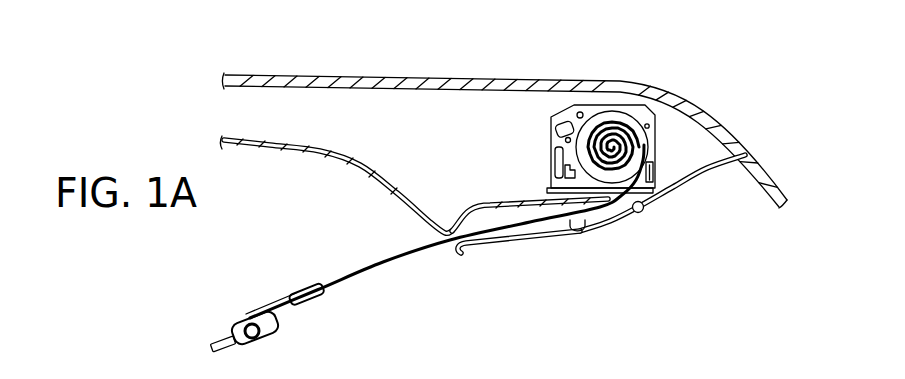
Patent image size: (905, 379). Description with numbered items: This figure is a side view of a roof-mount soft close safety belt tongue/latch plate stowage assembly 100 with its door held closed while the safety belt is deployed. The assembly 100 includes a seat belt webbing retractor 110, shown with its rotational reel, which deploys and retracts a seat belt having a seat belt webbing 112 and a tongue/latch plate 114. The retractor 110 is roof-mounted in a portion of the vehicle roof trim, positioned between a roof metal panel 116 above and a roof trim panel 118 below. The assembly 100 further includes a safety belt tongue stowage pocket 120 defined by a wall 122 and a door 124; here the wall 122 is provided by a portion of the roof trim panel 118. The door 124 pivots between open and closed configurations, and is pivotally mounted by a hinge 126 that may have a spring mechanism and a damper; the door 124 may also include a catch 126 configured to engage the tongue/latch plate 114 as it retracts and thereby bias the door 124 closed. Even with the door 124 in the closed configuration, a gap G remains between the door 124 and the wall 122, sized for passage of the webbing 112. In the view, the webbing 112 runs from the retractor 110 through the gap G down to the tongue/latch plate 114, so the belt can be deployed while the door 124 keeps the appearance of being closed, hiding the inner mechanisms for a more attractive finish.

The soft close safety belt tongue/latch plate stowage assembly 100 is at (703, 62).
The seat belt webbing retractor 110 is at (656, 134).
The seat belt webbing 112 is at (385, 262).
The tongue/latch plate 114 is at (272, 302).
The roof metal panel 116 is at (343, 82).
The roof trim panel 118 is at (325, 151).
The safety belt tongue stowage pocket 120 is at (620, 231).
The wall 122 is at (470, 208).
The door 124 is at (478, 262).
The hinge 126 is at (575, 232).
The gap G is at (453, 245).